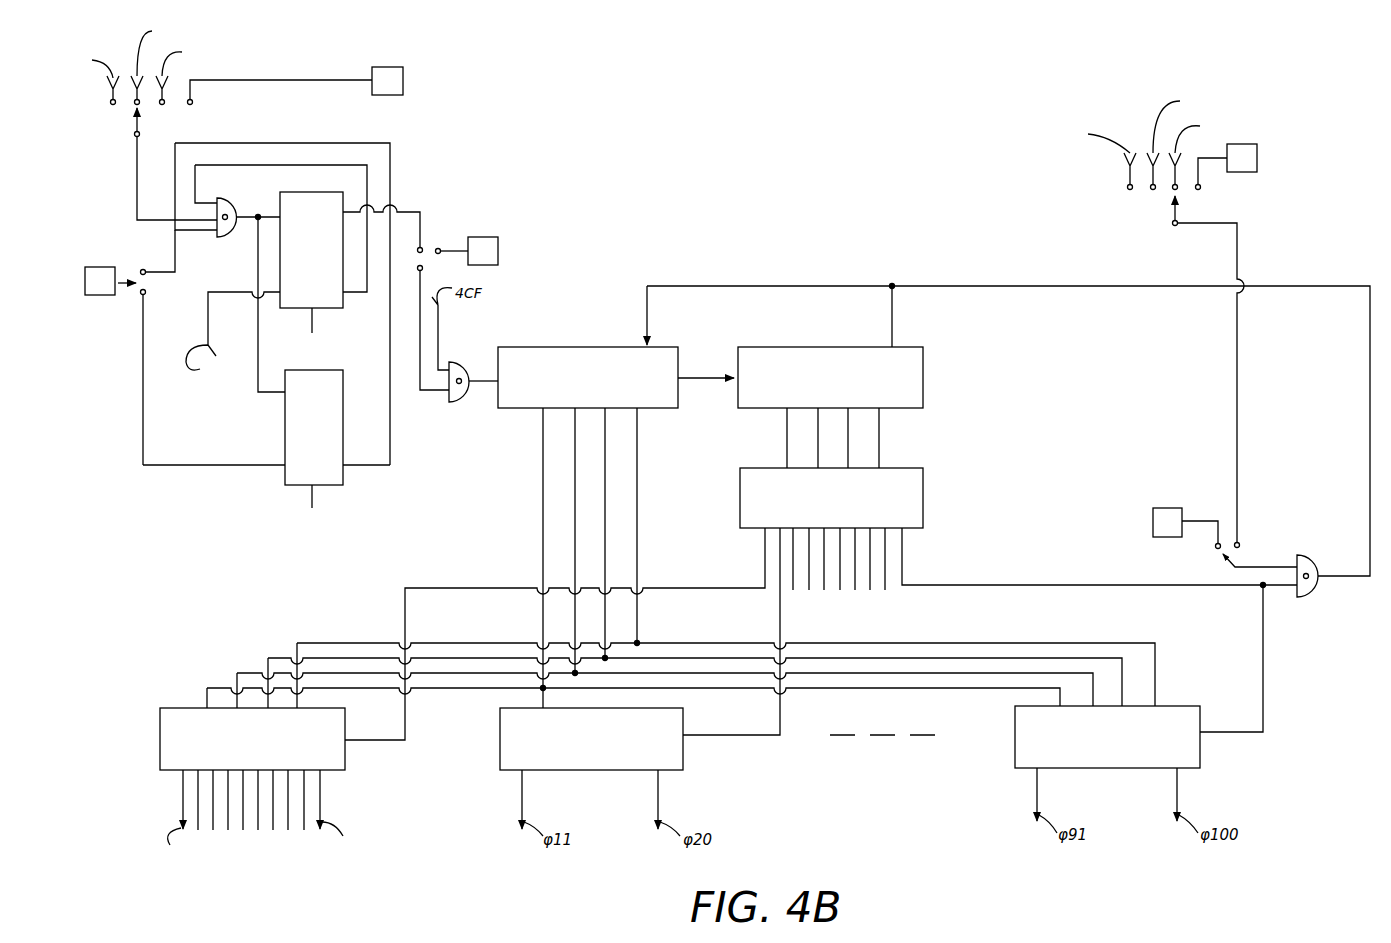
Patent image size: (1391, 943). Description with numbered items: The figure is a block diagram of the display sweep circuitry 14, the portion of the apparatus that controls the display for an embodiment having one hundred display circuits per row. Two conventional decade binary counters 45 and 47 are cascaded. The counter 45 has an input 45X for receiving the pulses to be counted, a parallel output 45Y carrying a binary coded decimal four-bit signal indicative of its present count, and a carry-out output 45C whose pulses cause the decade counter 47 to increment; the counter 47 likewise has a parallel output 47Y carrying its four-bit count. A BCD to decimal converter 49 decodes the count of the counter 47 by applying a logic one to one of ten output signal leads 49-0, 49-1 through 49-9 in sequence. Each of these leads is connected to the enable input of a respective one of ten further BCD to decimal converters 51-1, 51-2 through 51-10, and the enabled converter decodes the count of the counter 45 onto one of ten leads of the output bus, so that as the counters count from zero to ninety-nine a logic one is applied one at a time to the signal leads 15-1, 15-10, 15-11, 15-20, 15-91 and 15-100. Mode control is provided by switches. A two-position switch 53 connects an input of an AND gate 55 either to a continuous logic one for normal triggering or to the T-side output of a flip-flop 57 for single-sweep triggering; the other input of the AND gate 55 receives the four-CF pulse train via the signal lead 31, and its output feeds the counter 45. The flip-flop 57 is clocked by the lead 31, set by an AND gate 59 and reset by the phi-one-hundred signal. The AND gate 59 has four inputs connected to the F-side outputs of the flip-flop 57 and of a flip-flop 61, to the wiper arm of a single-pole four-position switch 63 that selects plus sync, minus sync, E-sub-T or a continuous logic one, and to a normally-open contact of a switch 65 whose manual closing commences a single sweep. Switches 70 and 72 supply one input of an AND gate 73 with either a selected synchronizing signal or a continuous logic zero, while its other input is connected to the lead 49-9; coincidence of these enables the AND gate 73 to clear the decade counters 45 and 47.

The display sweep circuitry 14 is at (253, 833).
The signal lead 15-1 is at (183, 806).
The signal lead 15-10 is at (322, 793).
The signal lead 15-11 is at (522, 804).
The signal lead 15-20 is at (660, 783).
The signal lead 15-91 is at (1035, 798).
The signal lead 15-100 is at (1178, 788).
The signal lead 31 is at (313, 322).
The decade binary counter 45 is at (553, 347).
The input 45X is at (497, 384).
The parallel output 45Y is at (537, 452).
The carry-out output 45C is at (682, 381).
The decade binary counter 47 is at (790, 347).
The parallel output 47Y is at (907, 432).
The BCD to decimal converter 49 is at (922, 468).
The output signal lead 49-0 is at (682, 589).
The output signal lead 49-1 is at (782, 618).
The output signal lead 49-9 is at (965, 585).
The BCD to decimal converter 51-1 is at (178, 708).
The BCD to decimal converter 51-2 is at (500, 726).
The BCD to decimal converter 51-10 is at (1165, 706).
The switch 53 is at (430, 246).
The AND gate 55 is at (456, 401).
The flip-flop 57 is at (326, 192).
The AND gate 59 is at (222, 237).
The flip-flop 61 is at (283, 478).
The single-pole, four-position switch 63 is at (125, 122).
The switch 65 is at (133, 294).
The switch 70 is at (1244, 552).
The switch 72 is at (1164, 199).
The AND gate 73 is at (1313, 591).